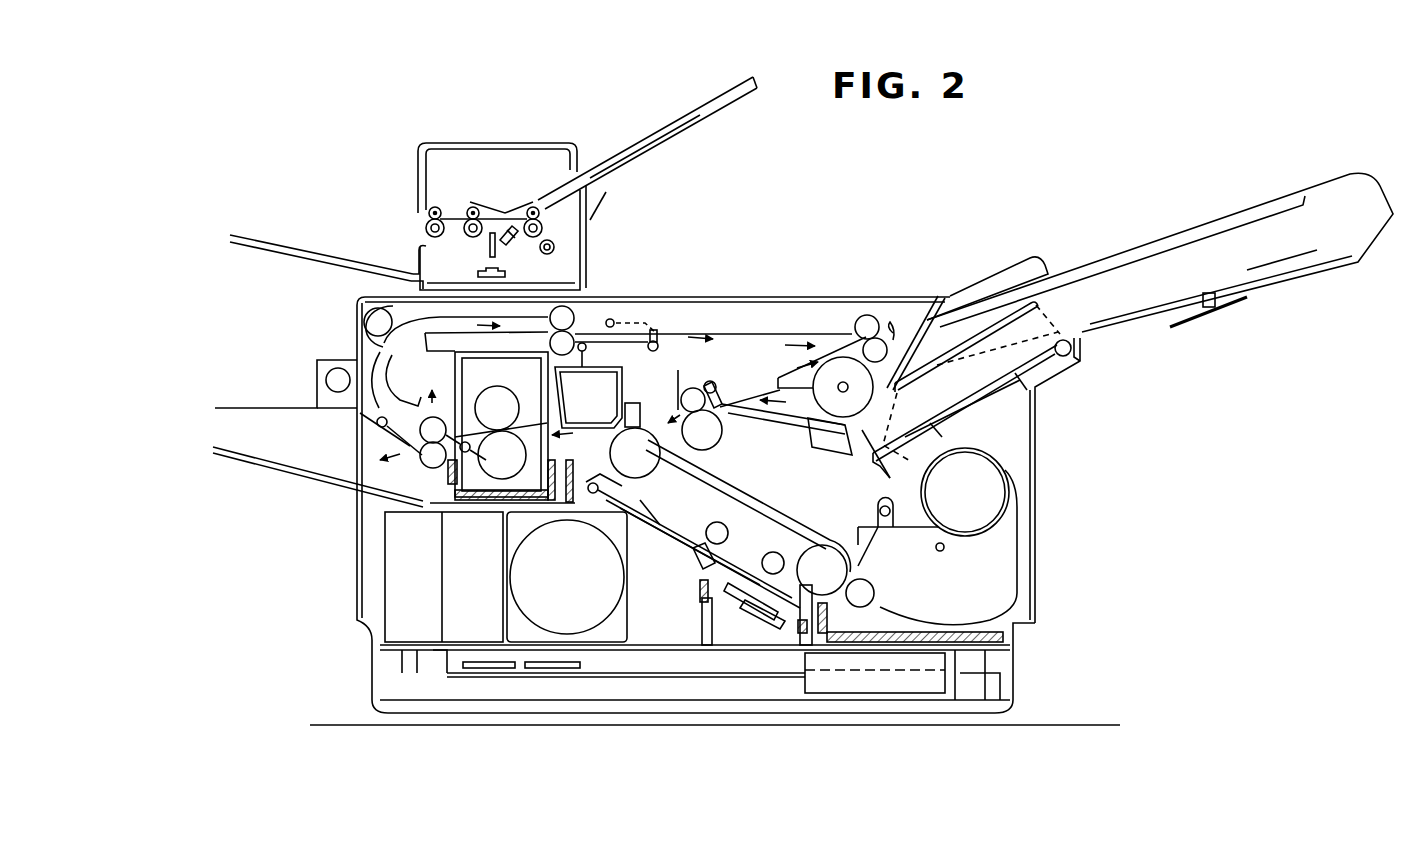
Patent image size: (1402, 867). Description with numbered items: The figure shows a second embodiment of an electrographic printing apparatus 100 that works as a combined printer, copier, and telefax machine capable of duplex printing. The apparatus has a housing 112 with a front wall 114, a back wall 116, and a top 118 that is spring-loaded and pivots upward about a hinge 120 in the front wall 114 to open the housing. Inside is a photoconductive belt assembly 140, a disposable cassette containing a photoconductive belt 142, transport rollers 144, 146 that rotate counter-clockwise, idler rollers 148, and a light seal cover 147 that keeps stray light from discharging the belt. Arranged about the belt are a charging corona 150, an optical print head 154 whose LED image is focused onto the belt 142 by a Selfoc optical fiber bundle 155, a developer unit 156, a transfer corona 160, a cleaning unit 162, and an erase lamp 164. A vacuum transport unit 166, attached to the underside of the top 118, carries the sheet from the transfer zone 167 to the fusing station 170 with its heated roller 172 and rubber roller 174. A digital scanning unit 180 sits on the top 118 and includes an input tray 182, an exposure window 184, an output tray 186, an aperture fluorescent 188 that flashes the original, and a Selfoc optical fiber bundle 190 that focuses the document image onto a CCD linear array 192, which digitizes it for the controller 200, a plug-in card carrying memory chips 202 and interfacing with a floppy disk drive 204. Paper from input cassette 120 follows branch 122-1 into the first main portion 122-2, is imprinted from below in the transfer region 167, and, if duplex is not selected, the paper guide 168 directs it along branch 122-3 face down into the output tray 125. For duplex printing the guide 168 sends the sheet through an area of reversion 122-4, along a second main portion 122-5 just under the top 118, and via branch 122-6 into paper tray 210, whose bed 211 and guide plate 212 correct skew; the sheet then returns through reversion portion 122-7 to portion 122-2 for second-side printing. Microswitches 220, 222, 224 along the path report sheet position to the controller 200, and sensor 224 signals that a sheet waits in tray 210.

The electrographic printing apparatus 100 is at (344, 553).
The housing 112 is at (812, 297).
The front wall 114 is at (358, 518).
The back wall 116 is at (1036, 436).
The top 118 is at (873, 297).
The hinge / paper input cassette 120 is at (370, 310).
The branch of paper path 122-1 is at (745, 420).
The first main portion of paper path 122-2 is at (620, 404).
The branch of paper path 122-3 is at (370, 470).
The area of reversion 122-4 is at (406, 380).
The second main portion of paper path 122-5 is at (481, 308).
The branch of paper path 122-6 is at (800, 343).
The reversion portion 122-7 is at (769, 377).
The output tray 125 is at (268, 468).
The photoconductive belt assembly 140 is at (780, 489).
The photoconductive belt 142 is at (800, 532).
The transport roller 144 is at (721, 434).
The transport roller 146 is at (857, 562).
The light seal cover 147 is at (806, 501).
The idler rollers 148 is at (767, 557).
The charging corona 150 is at (688, 568).
The optical print head 154 is at (733, 603).
The Selfoc optical fiber bundle 155 is at (758, 617).
The developer unit 156 is at (1020, 538).
The transfer corona 160 is at (643, 388).
The cleaning unit 162 is at (622, 474).
The erase lamp 164 is at (659, 521).
The vacuum transport unit 166 is at (621, 384).
The transfer zone 167 is at (640, 428).
The paper guide 168 is at (372, 432).
The fusing station 170 is at (451, 378).
The heated roller 172 is at (497, 486).
The rubber roller 174 is at (497, 394).
The digital scanning unit 180 is at (597, 246).
The input tray 182 is at (715, 118).
The exposure window 184 is at (540, 255).
The output tray 186 is at (260, 249).
The aperture fluorescent 188 is at (517, 237).
The Selfoc optical fiber bundle 190 is at (489, 249).
The CCD linear array 192 is at (476, 275).
The controller 200 is at (665, 678).
The memory chips 202 is at (474, 660).
The floppy disk drive 204 is at (804, 662).
The paper tray 210 is at (1127, 252).
The bed 211 is at (1077, 253).
The guide plate 212 is at (1027, 258).
The microswitch 220 is at (722, 374).
The microswitch 222 is at (648, 343).
The microswitch 224 is at (898, 335).